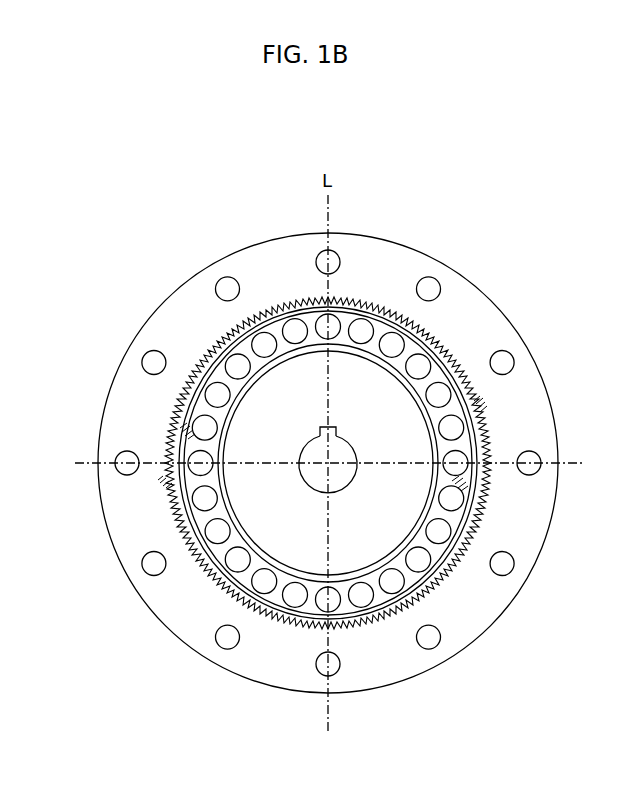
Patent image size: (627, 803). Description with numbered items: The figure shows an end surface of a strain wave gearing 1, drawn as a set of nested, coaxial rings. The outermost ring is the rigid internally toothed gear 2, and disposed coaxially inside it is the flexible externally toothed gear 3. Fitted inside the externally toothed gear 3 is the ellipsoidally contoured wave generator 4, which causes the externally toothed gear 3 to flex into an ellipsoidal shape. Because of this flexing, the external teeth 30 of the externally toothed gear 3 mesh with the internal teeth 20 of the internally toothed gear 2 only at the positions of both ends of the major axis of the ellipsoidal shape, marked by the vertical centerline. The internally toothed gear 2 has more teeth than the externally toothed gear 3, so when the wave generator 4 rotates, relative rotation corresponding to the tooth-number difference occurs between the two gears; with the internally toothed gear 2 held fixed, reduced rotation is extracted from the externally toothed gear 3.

The strain wave gearing 1 is at (428, 235).
The rigid internally toothed gear 2 is at (463, 352).
The flexible externally toothed gear 3 is at (479, 408).
The wave generator 4 is at (458, 485).
The internal teeth 20 is at (187, 431).
The external teeth 30 is at (162, 481).